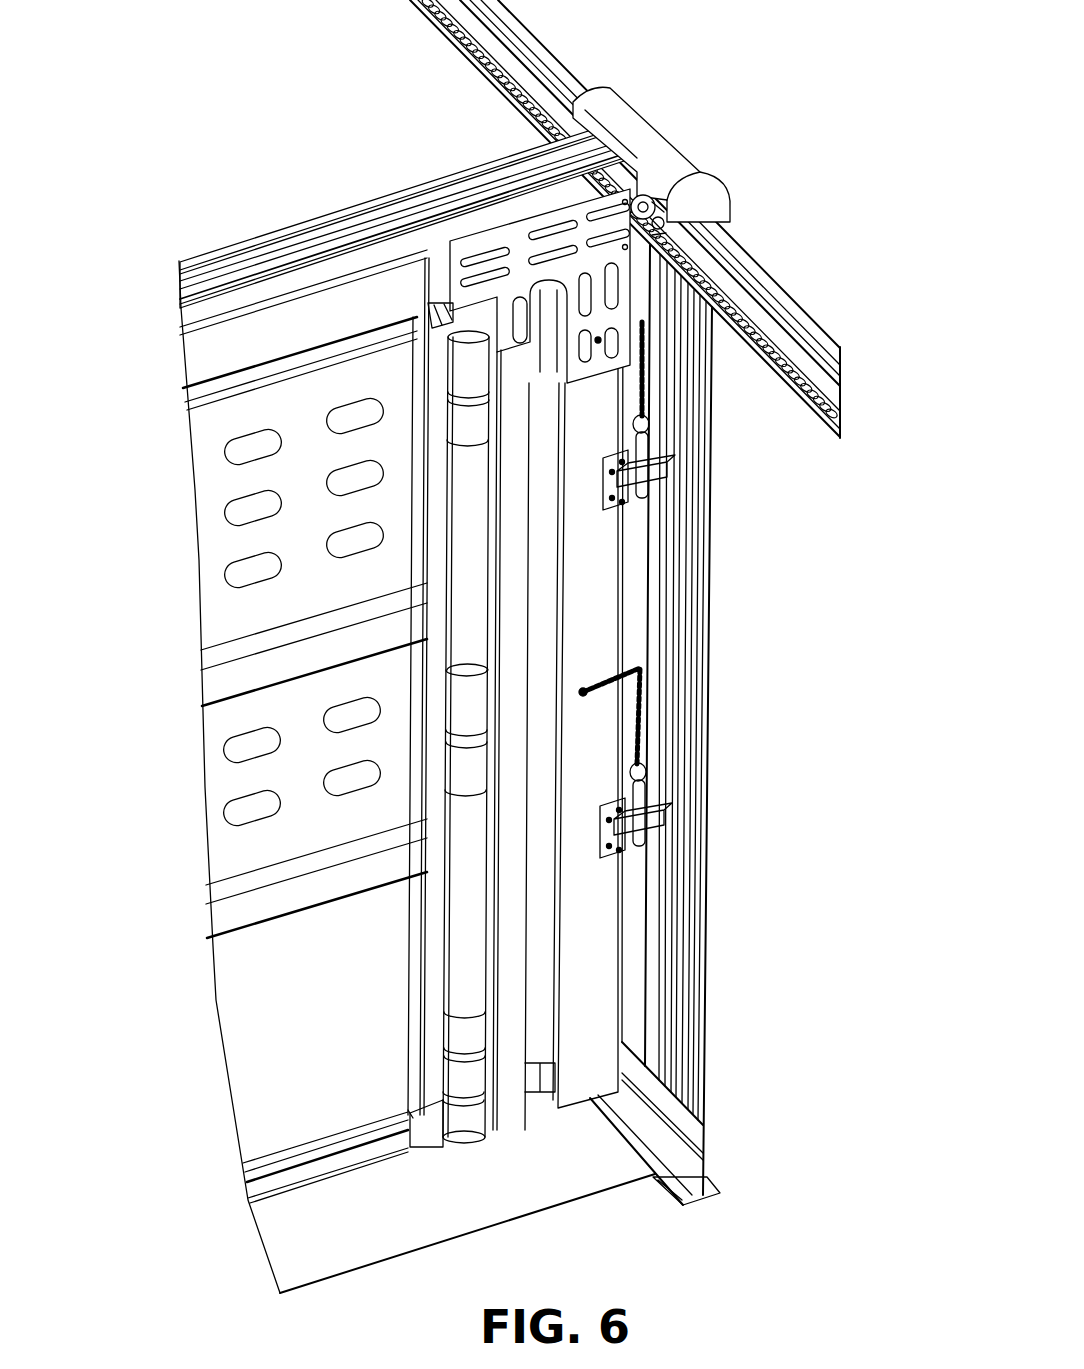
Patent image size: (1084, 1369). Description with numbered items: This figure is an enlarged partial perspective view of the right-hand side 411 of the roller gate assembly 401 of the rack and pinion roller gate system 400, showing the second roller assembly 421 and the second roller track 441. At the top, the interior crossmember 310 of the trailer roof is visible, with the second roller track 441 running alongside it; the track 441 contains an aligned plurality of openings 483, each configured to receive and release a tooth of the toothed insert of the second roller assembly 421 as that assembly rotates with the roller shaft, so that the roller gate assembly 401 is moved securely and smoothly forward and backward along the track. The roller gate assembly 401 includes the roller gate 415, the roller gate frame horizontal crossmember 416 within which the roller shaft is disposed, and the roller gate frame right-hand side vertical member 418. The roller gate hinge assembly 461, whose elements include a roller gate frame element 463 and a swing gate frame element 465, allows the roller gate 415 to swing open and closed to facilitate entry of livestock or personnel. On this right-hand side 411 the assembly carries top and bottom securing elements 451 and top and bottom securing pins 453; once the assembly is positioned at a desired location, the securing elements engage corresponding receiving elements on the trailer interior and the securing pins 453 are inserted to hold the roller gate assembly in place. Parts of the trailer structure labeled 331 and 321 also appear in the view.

The rack and pinion roller gate system 400 is at (138, 361).
The roller gate assembly 401 is at (218, 332).
The roller gate frame horizontal crossmember 416 is at (273, 322).
The interior crossmember 310 is at (352, 218).
The swing gate frame element 465 is at (432, 300).
The right-hand side 411 is at (583, 187).
The rail bracket 331 is at (657, 132).
The second roller assembly 421 is at (678, 222).
The openings 483 is at (827, 373).
The second roller track 441 is at (822, 420).
The roller gate hinge assembly 461 is at (517, 392).
The roller gate frame element 463 is at (510, 657).
The top and bottom securing pins 453 is at (660, 448).
The top and bottom securing elements 451 is at (623, 500).
The column 321 is at (718, 767).
The roller gate frame right-hand side vertical member 418 is at (600, 962).
The roller gate 415 is at (262, 1017).